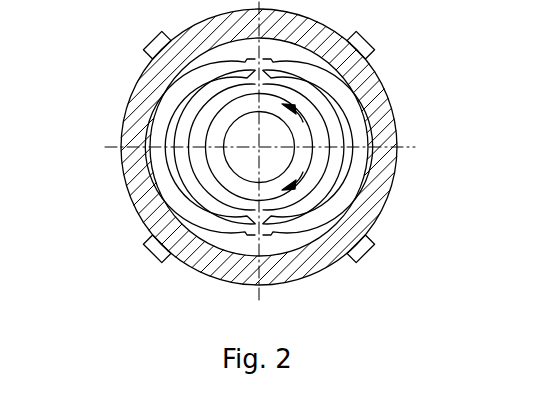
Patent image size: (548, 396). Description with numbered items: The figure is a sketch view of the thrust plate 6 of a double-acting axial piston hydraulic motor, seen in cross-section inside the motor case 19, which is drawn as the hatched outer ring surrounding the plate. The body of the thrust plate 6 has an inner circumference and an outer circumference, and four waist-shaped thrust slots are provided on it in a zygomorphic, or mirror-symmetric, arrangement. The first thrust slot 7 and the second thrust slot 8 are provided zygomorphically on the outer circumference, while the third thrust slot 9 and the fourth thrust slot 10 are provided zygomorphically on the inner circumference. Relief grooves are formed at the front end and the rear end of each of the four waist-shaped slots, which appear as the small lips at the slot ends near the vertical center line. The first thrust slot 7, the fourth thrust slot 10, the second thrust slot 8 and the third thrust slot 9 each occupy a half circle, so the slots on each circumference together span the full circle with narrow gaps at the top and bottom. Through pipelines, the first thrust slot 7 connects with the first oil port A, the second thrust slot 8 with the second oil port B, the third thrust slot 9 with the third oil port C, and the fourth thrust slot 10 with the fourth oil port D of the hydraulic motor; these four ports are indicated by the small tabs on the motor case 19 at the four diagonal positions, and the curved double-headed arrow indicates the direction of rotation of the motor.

The motor case 19 is at (368, 88).
The thrust plate 6 is at (168, 108).
The first thrust slot 7 is at (172, 121).
The second thrust slot 8 is at (340, 115).
The third thrust slot 9 is at (327, 166).
The fourth thrust slot 10 is at (198, 173).
The first oil port A is at (153, 41).
The second oil port B is at (365, 41).
The third oil port C is at (365, 253).
The fourth oil port D is at (153, 253).